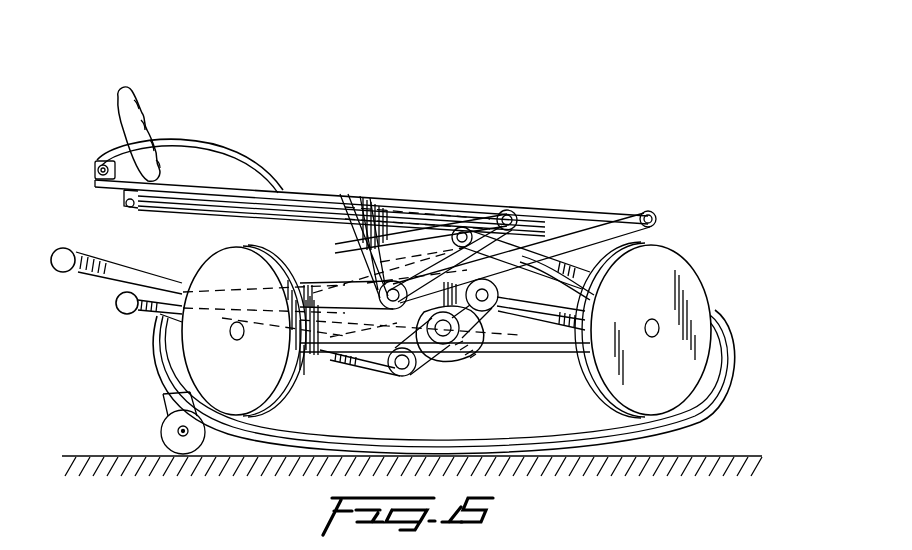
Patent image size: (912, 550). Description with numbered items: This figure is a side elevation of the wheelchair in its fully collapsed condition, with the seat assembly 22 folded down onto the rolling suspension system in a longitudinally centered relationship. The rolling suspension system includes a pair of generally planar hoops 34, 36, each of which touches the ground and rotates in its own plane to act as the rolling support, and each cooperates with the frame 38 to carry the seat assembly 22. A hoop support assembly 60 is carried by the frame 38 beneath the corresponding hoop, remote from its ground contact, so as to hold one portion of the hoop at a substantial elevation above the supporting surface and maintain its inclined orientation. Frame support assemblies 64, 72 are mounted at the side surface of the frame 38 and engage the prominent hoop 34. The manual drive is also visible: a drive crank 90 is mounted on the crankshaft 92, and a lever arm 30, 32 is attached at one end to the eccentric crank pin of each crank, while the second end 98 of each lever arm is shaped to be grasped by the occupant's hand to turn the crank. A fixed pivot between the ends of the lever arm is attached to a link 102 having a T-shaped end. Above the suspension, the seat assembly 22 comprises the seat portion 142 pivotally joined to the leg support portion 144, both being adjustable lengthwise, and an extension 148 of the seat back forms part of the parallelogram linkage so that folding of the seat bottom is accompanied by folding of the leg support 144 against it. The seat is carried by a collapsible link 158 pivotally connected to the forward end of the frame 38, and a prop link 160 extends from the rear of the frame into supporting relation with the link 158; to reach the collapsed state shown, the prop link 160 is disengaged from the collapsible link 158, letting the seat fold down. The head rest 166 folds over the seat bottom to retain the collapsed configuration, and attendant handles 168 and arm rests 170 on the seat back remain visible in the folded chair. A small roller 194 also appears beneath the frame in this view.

The seat assembly 22 is at (340, 186).
The lever arm 30 is at (160, 312).
The lever arm 32 is at (108, 268).
The hoop 34 is at (297, 440).
The hoop 36 is at (553, 287).
The frame 38 is at (555, 336).
The hoop support assembly 60 is at (444, 346).
The frame support assembly 64 is at (190, 350).
The frame support assembly 72 is at (690, 272).
The drive crank 90 is at (421, 365).
The crankshaft 92 is at (458, 342).
The second end of lever arm 98 is at (63, 247).
The link 102 is at (334, 356).
The seat portion 142 is at (283, 198).
The leg support portion 144 is at (227, 215).
The extension of the seat back 148 is at (593, 213).
The collapsible link 158 is at (417, 242).
The prop link 160 is at (533, 262).
The head rest 166 is at (193, 142).
The attendant handle 168 is at (123, 88).
The arm rest 170 is at (363, 201).
The caster wheel 194 is at (170, 445).